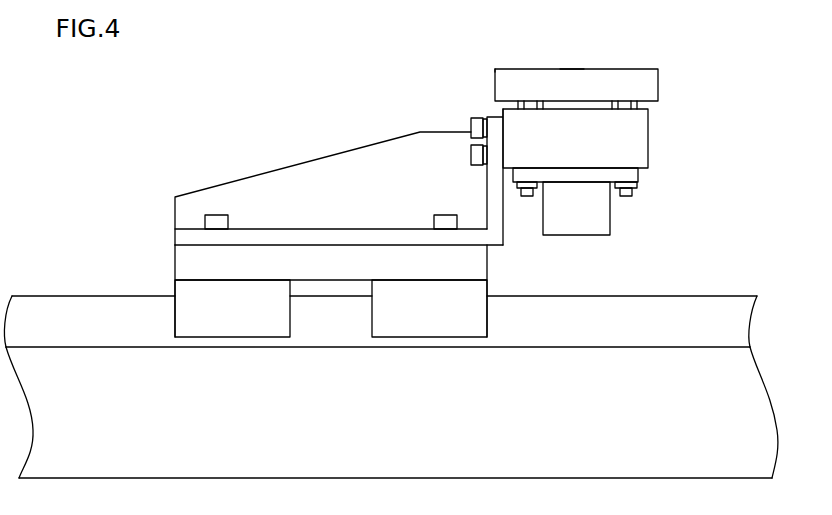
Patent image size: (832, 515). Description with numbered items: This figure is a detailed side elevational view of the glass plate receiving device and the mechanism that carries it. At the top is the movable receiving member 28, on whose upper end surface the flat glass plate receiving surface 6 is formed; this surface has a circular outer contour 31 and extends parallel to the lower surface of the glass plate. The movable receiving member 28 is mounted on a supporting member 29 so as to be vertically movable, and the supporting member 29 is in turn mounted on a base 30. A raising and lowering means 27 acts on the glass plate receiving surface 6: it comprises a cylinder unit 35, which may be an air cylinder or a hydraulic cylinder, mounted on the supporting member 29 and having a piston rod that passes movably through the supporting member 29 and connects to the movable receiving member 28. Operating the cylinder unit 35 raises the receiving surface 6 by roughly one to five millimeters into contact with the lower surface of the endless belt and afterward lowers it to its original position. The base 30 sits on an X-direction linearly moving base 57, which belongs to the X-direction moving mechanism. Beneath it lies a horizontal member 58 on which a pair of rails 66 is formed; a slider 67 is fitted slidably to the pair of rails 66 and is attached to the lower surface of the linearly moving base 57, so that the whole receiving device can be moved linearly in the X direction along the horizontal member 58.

The glass plate receiving surface 6 is at (572, 69).
The raising and lowering means 27 is at (648, 231).
The movable receiving member 28 is at (647, 86).
The supporting member 29 is at (640, 135).
The base 30 is at (332, 193).
The circular outer contour 31 is at (495, 69).
The cylinder unit 35 is at (575, 210).
The X-direction linearly moving base 57 is at (205, 270).
The horizontal member 58 is at (725, 373).
The pair of rails 66 is at (672, 316).
The slider 67 is at (235, 315).